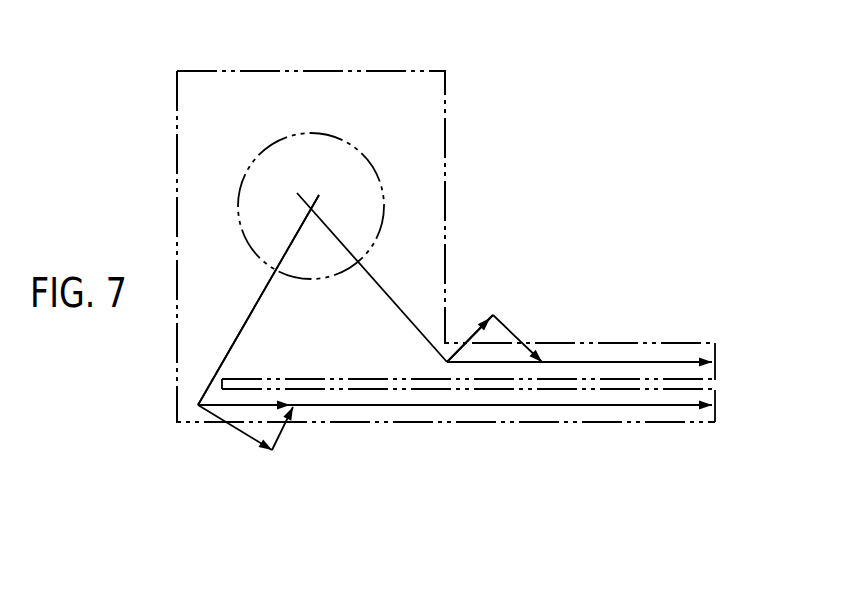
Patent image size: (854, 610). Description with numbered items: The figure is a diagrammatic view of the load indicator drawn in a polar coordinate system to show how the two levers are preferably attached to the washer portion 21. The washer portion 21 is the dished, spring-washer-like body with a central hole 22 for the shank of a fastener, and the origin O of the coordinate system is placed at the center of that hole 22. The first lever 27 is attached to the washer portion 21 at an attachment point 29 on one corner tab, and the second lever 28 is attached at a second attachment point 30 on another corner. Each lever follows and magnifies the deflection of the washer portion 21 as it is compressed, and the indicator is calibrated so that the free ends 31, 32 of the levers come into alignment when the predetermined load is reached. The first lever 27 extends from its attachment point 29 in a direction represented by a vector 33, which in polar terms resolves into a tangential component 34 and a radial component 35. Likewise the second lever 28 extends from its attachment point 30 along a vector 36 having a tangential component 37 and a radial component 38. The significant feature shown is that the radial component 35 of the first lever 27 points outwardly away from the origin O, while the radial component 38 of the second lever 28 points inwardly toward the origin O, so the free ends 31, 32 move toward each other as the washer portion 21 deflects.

The washer portion 21 is at (438, 190).
The central hole 22 is at (353, 146).
The origin O is at (316, 206).
The first lever 27 is at (595, 343).
The second lever 28 is at (548, 424).
The attachment point 29 is at (447, 362).
The second attachment point 30 is at (198, 405).
The free end of the first lever 31 is at (716, 350).
The free end of the second lever 32 is at (716, 395).
The directional vector of the first lever 33 is at (665, 362).
The tangential component 34 is at (473, 330).
The radial component 35 is at (508, 327).
The directional vector of the second lever 36 is at (345, 407).
The tangential component 37 is at (240, 430).
The radial component 38 is at (283, 420).